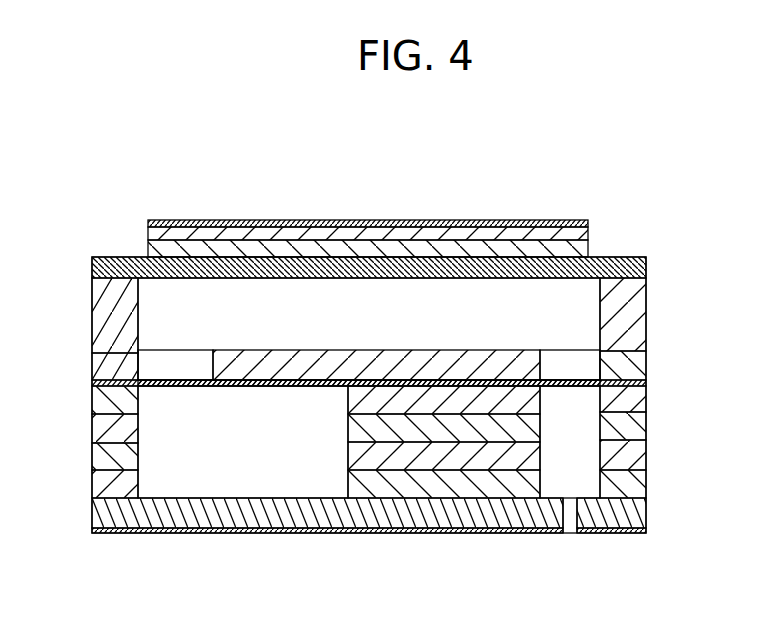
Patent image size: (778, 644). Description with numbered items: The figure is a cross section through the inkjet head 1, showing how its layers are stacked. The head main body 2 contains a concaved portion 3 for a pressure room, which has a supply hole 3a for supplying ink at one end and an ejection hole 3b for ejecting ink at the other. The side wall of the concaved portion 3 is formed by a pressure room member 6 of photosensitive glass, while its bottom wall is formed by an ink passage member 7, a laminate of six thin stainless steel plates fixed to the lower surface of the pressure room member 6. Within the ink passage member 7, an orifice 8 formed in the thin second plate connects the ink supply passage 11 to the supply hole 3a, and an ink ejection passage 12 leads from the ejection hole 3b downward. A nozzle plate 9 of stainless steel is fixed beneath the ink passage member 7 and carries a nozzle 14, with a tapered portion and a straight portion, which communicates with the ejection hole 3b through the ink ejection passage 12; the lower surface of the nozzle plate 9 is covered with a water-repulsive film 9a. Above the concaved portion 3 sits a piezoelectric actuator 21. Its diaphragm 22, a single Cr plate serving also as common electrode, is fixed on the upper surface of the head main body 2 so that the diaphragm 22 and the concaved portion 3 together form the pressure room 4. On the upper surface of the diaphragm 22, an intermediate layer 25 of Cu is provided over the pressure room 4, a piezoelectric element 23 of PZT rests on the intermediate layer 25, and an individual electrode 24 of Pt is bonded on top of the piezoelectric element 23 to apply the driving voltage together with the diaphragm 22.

The inkjet head 1 is at (98, 125).
The head main body 2 is at (68, 389).
The concaved portion 3 is at (138, 302).
The supply hole 3a is at (182, 356).
The ejection hole 3b is at (573, 356).
The pressure room 4 is at (399, 327).
The pressure room member 6 is at (646, 303).
The ink passage member 7 is at (652, 351).
The orifice 8 is at (180, 386).
The nozzle plate 9 is at (646, 513).
The water-repulsive film 9a is at (648, 532).
The ink supply passage 11 is at (300, 449).
The ink ejection passage 12 is at (590, 451).
The nozzle 14 is at (575, 546).
The piezoelectric actuator 21 is at (438, 187).
The diaphragm 22 is at (648, 264).
The piezoelectric element 23 is at (588, 236).
The individual electrode 24 is at (588, 222).
The intermediate layer 25 is at (588, 250).